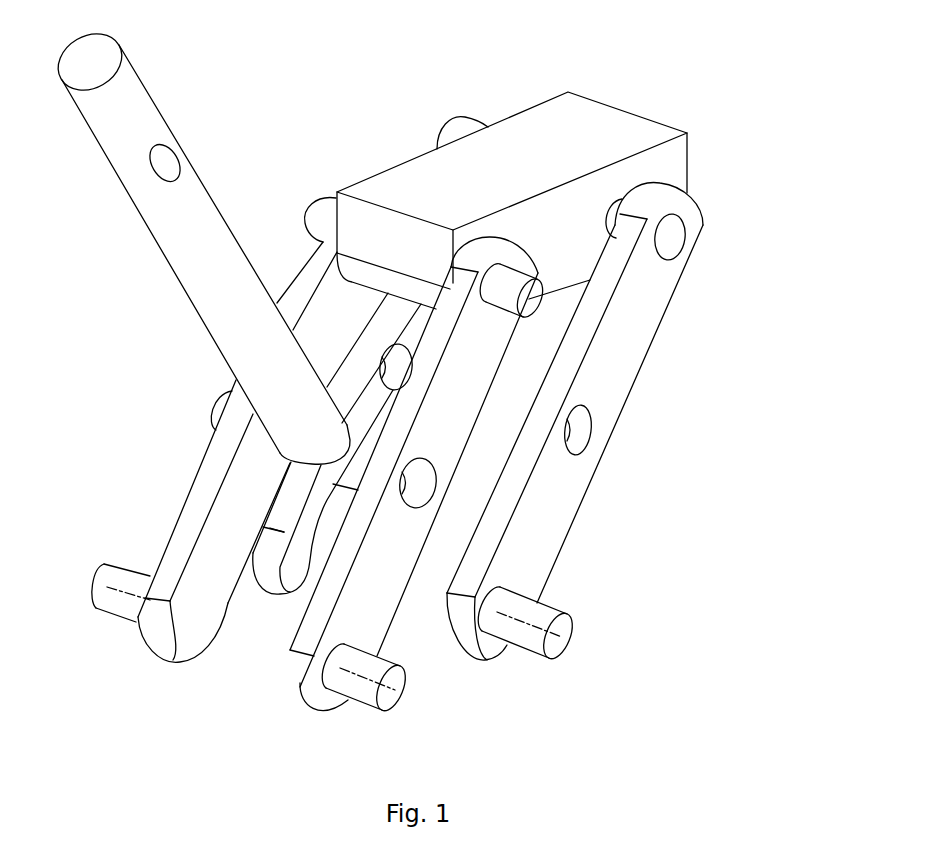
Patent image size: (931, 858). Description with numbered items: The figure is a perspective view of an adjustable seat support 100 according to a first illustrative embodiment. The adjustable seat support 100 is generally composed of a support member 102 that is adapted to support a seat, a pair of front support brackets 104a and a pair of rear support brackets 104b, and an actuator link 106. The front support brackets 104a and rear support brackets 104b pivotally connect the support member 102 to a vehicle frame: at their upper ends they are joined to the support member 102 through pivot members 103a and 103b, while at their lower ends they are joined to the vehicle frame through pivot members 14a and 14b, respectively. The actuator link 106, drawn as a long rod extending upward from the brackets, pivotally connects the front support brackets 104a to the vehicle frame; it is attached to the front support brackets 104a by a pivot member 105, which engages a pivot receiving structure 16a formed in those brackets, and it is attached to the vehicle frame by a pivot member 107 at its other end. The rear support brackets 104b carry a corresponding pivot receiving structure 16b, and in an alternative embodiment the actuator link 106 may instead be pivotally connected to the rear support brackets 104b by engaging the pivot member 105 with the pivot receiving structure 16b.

The adjustable seat support 100 is at (305, 90).
The support member 102 is at (633, 138).
The pivot member 103a is at (318, 236).
The pivot member 103b is at (667, 237).
The front support brackets 104a is at (290, 295).
The rear support brackets 104b is at (625, 366).
The pivot member 105 is at (283, 573).
The actuator link 106 is at (178, 240).
The pivot member 107 is at (167, 165).
The pivot member 14a is at (110, 594).
The pivot member 14b is at (562, 644).
The pivot receiving structure 16a is at (419, 494).
The pivot receiving structure 16b is at (596, 431).